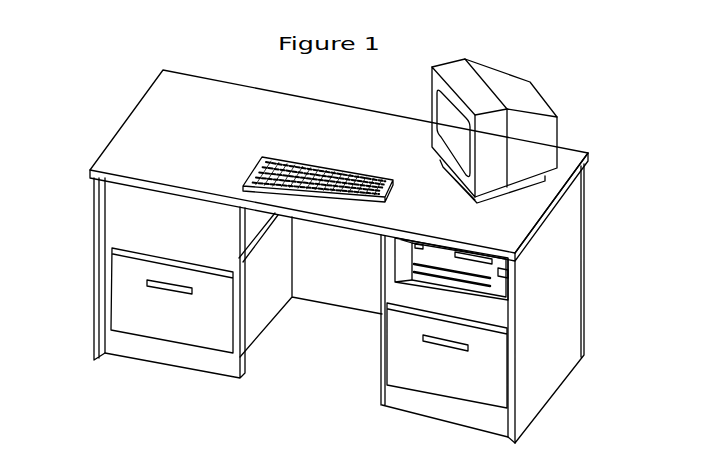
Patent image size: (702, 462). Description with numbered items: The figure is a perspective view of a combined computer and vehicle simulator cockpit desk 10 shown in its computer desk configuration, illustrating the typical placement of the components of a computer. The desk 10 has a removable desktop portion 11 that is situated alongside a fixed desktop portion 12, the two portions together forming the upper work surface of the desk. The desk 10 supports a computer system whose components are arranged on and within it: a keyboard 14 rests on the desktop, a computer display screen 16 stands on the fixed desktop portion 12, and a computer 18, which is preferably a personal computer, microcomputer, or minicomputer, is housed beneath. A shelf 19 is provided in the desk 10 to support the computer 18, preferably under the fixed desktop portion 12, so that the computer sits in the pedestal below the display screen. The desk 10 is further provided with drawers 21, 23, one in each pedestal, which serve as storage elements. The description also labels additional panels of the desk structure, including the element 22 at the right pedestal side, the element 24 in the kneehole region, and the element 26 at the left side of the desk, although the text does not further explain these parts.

The combined computer and vehicle simulator cockpit desk 10 is at (597, 117).
The removable desktop portion 11 is at (140, 137).
The fixed desktop portion 12 is at (515, 228).
The keyboard 14 is at (282, 163).
The computer display screen 16 is at (517, 100).
The computer 18 is at (440, 258).
The shelf 19 is at (402, 273).
The drawer 21 is at (412, 375).
The right pedestal side panel 22 is at (542, 360).
The drawer 23 is at (153, 302).
The kneehole back panel 24 is at (318, 285).
The left side panel 26 is at (94, 298).